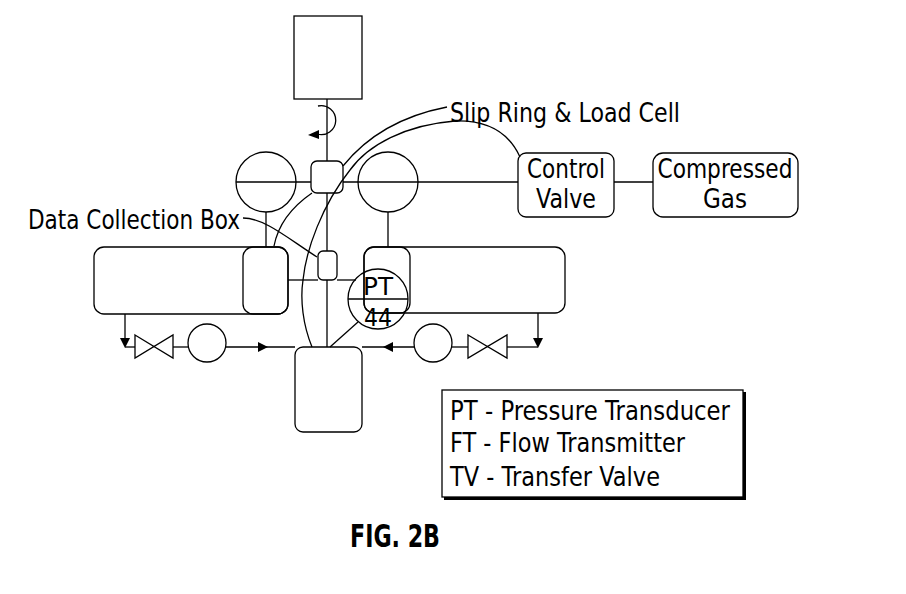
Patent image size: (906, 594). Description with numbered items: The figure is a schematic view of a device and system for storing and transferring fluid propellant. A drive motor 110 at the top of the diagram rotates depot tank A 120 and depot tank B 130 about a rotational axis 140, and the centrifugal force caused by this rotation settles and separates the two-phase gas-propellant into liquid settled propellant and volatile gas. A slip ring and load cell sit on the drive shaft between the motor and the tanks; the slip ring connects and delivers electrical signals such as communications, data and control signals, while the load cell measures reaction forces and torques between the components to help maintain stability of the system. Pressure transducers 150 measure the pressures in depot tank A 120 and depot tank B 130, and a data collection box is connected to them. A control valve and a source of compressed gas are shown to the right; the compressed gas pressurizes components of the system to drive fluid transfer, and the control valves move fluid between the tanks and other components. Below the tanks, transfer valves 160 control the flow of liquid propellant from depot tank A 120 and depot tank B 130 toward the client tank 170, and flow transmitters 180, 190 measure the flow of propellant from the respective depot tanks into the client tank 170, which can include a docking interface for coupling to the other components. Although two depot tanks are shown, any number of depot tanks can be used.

The drive motor 110 is at (362, 58).
The rotational axis 140 is at (345, 113).
The pressure transducers 150 is at (236, 182).
The depot tank A 120 is at (94, 280).
The depot tank B 130 is at (565, 278).
The transfer valves 160 is at (136, 352).
The client tank 170 is at (295, 390).
The flow transmitter 180 is at (207, 362).
The flow transmitter 190 is at (433, 362).